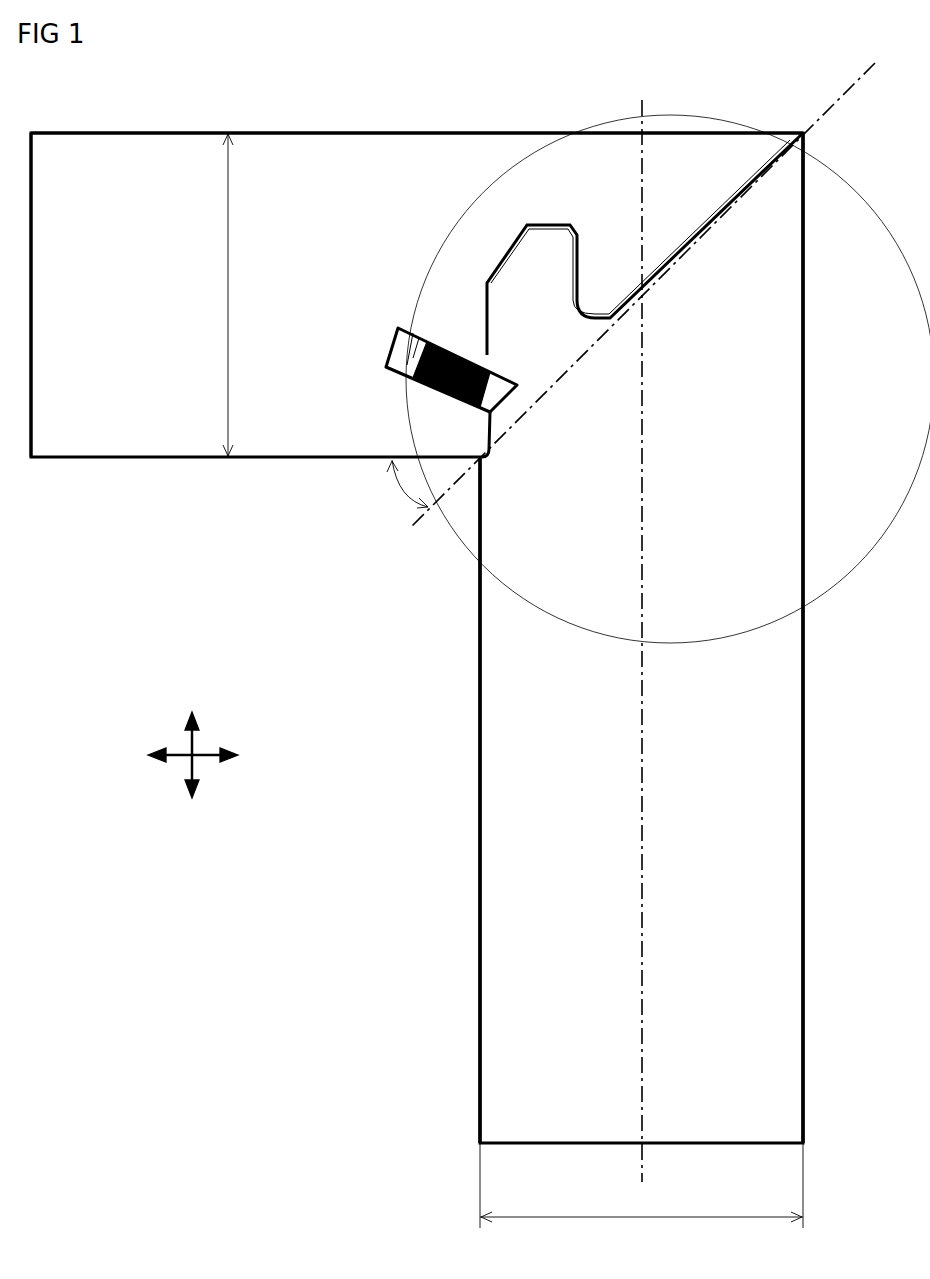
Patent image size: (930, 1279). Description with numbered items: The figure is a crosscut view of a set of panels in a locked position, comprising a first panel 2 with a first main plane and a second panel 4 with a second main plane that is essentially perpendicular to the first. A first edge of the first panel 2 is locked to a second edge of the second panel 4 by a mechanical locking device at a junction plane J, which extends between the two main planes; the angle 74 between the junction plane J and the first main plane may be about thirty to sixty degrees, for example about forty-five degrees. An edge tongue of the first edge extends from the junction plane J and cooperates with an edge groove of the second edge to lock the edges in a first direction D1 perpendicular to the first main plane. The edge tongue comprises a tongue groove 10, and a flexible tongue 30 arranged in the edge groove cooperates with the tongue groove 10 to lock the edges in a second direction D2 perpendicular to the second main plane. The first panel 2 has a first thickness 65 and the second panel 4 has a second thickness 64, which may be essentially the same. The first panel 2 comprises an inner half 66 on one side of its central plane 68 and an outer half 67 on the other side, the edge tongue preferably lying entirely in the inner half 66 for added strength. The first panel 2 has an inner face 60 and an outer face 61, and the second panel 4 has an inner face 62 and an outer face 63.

The first panel 2 is at (538, 873).
The second panel 4 is at (180, 435).
The tongue groove 10 is at (512, 385).
The flexible tongue 30 is at (410, 382).
The inner face 60 is at (478, 993).
The outer face 61 is at (805, 845).
The inner face 62 is at (105, 457).
The outer face 63 is at (305, 133).
The second thickness 64 is at (214, 295).
The first thickness 65 is at (641, 1185).
The inner half 66 is at (510, 662).
The outer half 67 is at (772, 740).
The central plane 68 is at (643, 629).
The angle 74 is at (396, 485).
The junction plane J is at (642, 284).
The first direction D1 is at (212, 757).
The second direction D2 is at (195, 739).